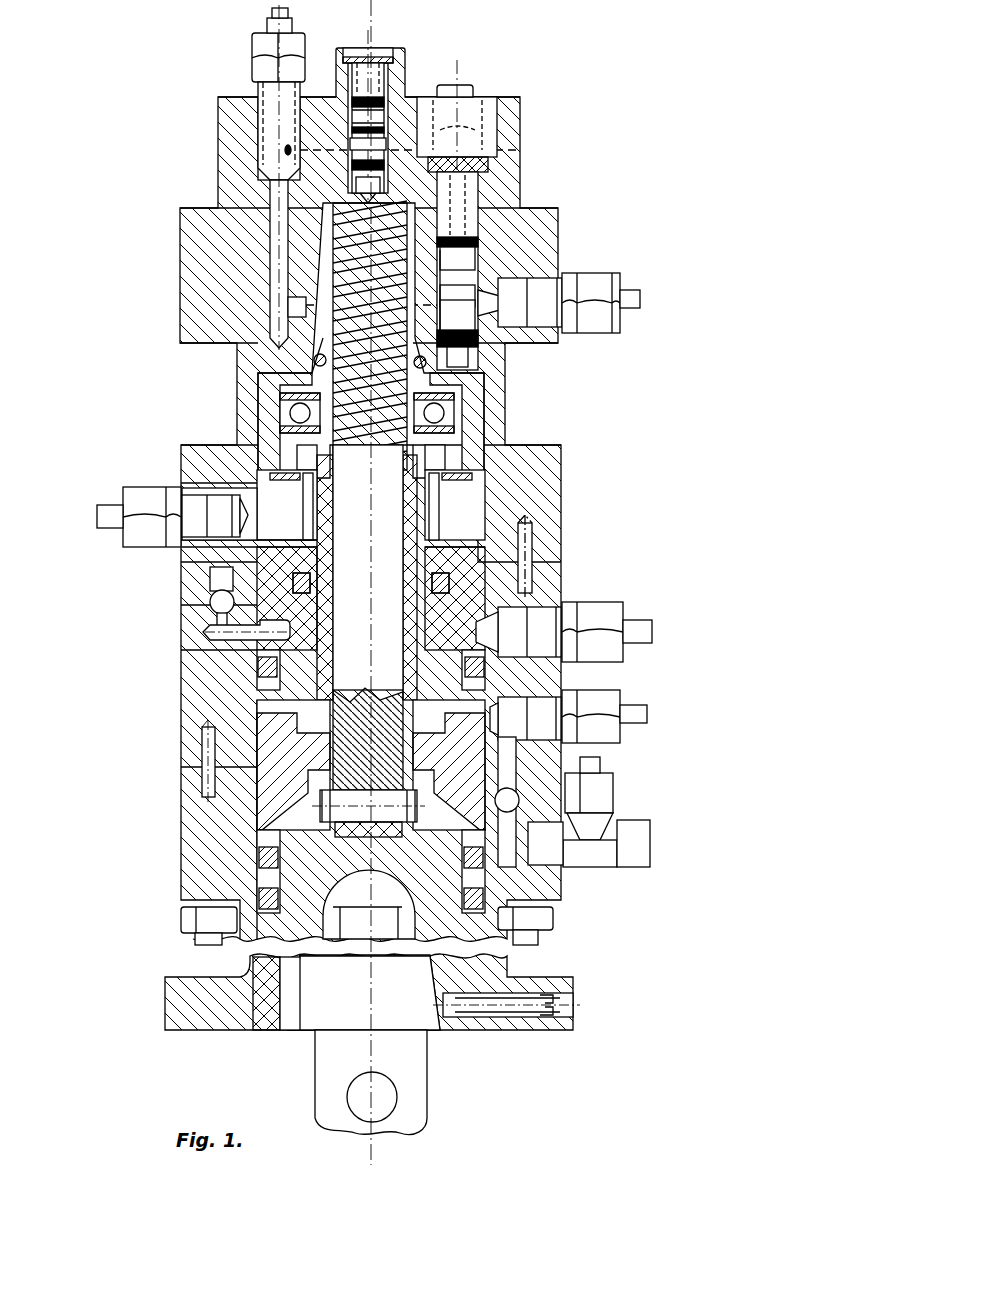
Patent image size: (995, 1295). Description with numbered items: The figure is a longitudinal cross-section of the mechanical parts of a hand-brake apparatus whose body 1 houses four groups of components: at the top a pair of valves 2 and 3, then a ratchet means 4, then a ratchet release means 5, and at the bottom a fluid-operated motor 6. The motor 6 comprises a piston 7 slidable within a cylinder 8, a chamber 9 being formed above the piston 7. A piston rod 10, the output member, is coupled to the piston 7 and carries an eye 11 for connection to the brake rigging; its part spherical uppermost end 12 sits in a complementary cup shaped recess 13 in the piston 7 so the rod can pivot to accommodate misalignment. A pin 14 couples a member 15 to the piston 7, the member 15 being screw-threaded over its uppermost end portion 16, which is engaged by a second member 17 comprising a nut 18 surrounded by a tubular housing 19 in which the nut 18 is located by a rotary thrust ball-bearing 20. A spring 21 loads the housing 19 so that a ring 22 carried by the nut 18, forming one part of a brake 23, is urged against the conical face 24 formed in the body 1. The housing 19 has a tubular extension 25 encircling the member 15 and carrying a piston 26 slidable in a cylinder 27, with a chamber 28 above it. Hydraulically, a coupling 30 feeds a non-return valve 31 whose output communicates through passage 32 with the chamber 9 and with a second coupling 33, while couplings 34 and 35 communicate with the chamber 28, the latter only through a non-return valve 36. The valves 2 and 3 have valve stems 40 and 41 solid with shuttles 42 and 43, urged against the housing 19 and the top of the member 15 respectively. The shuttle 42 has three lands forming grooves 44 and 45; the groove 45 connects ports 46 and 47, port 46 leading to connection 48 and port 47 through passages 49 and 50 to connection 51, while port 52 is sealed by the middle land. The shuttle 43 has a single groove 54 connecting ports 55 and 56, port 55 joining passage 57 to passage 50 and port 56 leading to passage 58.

The body 1 is at (575, 467).
The valve 2 is at (458, 279).
The valve 3 is at (335, 115).
The ratchet means 4 is at (490, 394).
The ratchet release means 5 is at (229, 686).
The fluid-operated motor 6 is at (522, 966).
The piston 7 is at (290, 1002).
The cylinder 8 is at (458, 933).
The chamber 9 is at (440, 822).
The piston rod 10 is at (387, 1012).
The eye 11 is at (396, 1098).
The part spherical uppermost end 12 is at (347, 898).
The cup shaped recess 13 is at (388, 882).
The pin 14 is at (340, 810).
The member 15 is at (371, 617).
The uppermost end portion 16 is at (340, 258).
The second member 17 is at (260, 468).
The nut 18 is at (287, 390).
The tubular housing 19 is at (470, 438).
The rotary thrust ball-bearing 20 is at (460, 422).
The spring 21 is at (250, 522).
The ring 22 is at (316, 358).
The brake 23 is at (490, 368).
The conical face 24 is at (307, 358).
The tubular extension 25 is at (448, 555).
The piston 26 is at (243, 617).
The cylinder 27 is at (456, 698).
The chamber 28 is at (245, 648).
The coupling 30 is at (603, 853).
The non-return valve 31 is at (512, 802).
The passage 32 is at (533, 833).
The second coupling 33 is at (606, 738).
The coupling 34 is at (543, 633).
The coupling 35 is at (135, 535).
The non-return valve 36 is at (210, 600).
The valve stem 40 is at (470, 340).
The valve stem 41 is at (357, 192).
The valve shuttle 42 is at (474, 292).
The valve shuttle 43 is at (350, 126).
The circumferential groove 44 is at (462, 277).
The circumferential groove 45 is at (448, 348).
The port 46 is at (565, 330).
The port 47 is at (440, 298).
The connection 48 is at (620, 278).
The passage 49 is at (290, 306).
The passage 50 is at (278, 262).
The connection 51 is at (258, 48).
The port 52 is at (472, 290).
The circumferential groove 54 is at (372, 147).
The port 55 is at (347, 152).
The port 56 is at (384, 150).
The passage 57 is at (286, 152).
The passage 58 is at (400, 143).